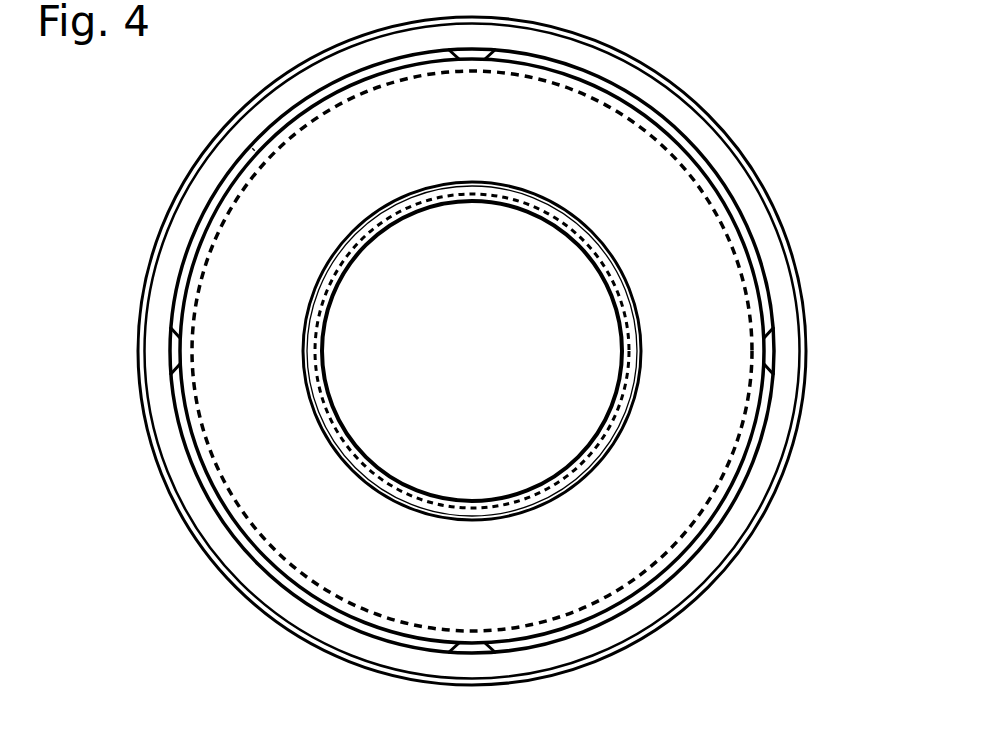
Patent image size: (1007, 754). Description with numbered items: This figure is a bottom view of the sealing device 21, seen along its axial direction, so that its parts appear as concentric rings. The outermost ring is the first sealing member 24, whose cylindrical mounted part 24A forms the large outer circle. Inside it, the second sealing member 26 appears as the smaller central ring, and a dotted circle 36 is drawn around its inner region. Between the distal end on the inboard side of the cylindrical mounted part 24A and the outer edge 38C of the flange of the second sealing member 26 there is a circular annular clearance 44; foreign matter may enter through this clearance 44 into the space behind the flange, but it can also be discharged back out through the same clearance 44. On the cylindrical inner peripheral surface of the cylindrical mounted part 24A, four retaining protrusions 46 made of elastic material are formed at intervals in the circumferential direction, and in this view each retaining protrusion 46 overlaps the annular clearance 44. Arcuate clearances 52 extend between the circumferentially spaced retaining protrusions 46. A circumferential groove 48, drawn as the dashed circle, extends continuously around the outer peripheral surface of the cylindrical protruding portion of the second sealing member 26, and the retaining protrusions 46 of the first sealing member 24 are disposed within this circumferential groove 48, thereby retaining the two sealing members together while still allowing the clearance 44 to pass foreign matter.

The sealing device 21 is at (180, 640).
The first sealing member 24 is at (260, 77).
The cylindrical mounted part 24A is at (240, 573).
The second sealing member 26 is at (454, 228).
The inner ring groove 36 is at (318, 372).
The outer edge of the flange 38C is at (220, 493).
The annular clearance 44 is at (297, 594).
The retaining protrusions 46 is at (472, 66).
The circumferential groove 48 is at (203, 433).
The arcuate clearances 52 is at (253, 150).